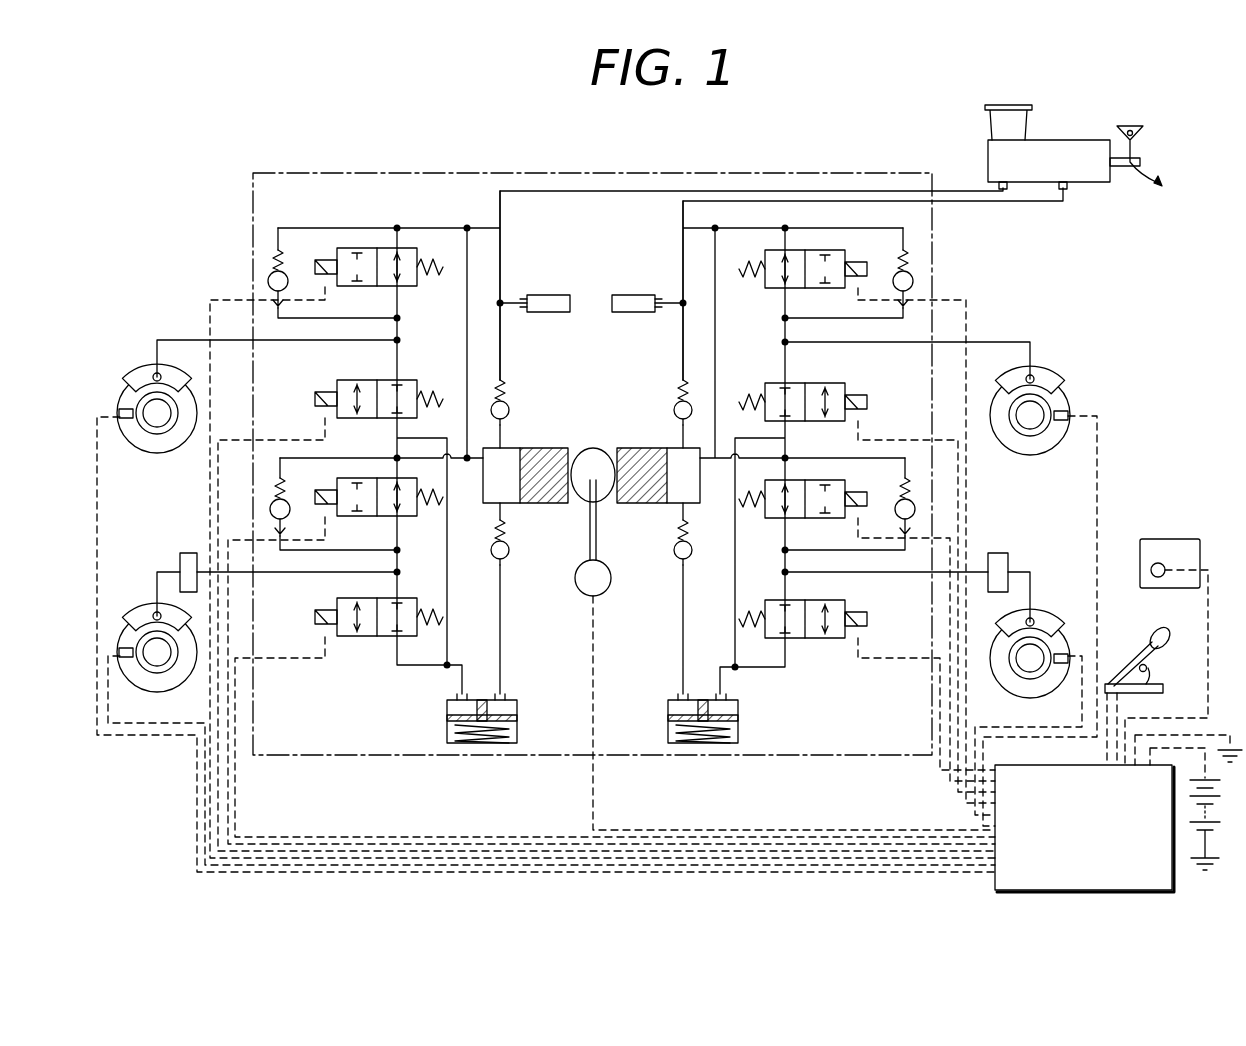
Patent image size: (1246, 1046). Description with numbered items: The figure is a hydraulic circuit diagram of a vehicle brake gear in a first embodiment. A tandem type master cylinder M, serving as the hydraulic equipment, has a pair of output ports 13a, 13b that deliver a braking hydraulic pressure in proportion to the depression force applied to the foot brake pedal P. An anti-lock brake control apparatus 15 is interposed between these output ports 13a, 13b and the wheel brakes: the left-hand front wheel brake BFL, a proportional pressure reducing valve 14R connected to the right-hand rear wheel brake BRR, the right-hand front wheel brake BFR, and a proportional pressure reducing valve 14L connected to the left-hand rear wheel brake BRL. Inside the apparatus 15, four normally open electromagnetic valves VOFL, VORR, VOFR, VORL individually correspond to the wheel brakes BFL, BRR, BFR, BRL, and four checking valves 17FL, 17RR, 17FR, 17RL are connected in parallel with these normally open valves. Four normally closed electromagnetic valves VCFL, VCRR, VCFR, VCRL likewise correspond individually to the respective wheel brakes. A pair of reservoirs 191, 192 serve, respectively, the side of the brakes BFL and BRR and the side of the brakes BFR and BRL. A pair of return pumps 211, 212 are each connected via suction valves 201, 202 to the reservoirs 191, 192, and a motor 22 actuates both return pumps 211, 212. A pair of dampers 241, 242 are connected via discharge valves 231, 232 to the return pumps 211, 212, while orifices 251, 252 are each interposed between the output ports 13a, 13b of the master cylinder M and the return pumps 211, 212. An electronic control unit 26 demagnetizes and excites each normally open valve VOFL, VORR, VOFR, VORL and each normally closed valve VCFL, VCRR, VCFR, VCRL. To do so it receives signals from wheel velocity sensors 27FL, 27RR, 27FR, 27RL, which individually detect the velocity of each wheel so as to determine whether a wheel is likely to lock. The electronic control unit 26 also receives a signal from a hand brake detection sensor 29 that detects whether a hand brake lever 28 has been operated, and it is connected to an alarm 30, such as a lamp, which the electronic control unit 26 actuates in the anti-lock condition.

The anti-lock brake control apparatus 15 is at (636, 172).
The master cylinder M is at (1066, 156).
The foot brake pedal P is at (1170, 184).
The output port 13a is at (997, 186).
The output port 13b is at (1068, 188).
The proportional pressure reducing valve 14R is at (182, 552).
The proportional pressure reducing valve 14L is at (1000, 552).
The checking valve 17FL is at (276, 250).
The checking valve 17FR is at (912, 284).
The checking valve 17RR is at (274, 478).
The checking valve 17RL is at (910, 506).
The reservoir 191 is at (447, 723).
The reservoir 192 is at (668, 723).
The suction valve 201 is at (506, 568).
The suction valve 202 is at (676, 568).
The return pump 211 is at (540, 446).
The return pump 212 is at (635, 446).
The motor 22 is at (608, 570).
The discharge valve 231 is at (512, 400).
The discharge valve 232 is at (672, 395).
The damper 241 is at (560, 313).
The damper 242 is at (657, 300).
The orifice 251 is at (506, 284).
The orifice 252 is at (690, 286).
The electronic control unit 26 is at (1106, 846).
The wheel velocity sensor 27FL is at (125, 421).
The wheel velocity sensor 27FR is at (1068, 414).
The wheel velocity sensor 27RR is at (128, 660).
The wheel velocity sensor 27RL is at (1052, 668).
The hand brake lever 28 is at (1158, 630).
The hand brake detection sensor 29 is at (1147, 668).
The alarm 30 is at (1153, 540).
The left-hand front wheel brake BFL is at (139, 372).
The right-hand front wheel brake BFR is at (1049, 372).
The right-hand rear wheel brake BRR is at (146, 611).
The left-hand rear wheel brake BRL is at (1043, 611).
The normally open electromagnetic valve VOFL is at (414, 288).
The normally closed electromagnetic valve VCFL is at (352, 380).
The normally open electromagnetic valve VORR is at (368, 517).
The normally closed electromagnetic valve VCRR is at (367, 637).
The normally open electromagnetic valve VOFR is at (772, 290).
The normally closed electromagnetic valve VCFR is at (813, 383).
The normally open electromagnetic valve VORL is at (780, 520).
The normally closed electromagnetic valve VCRL is at (836, 600).